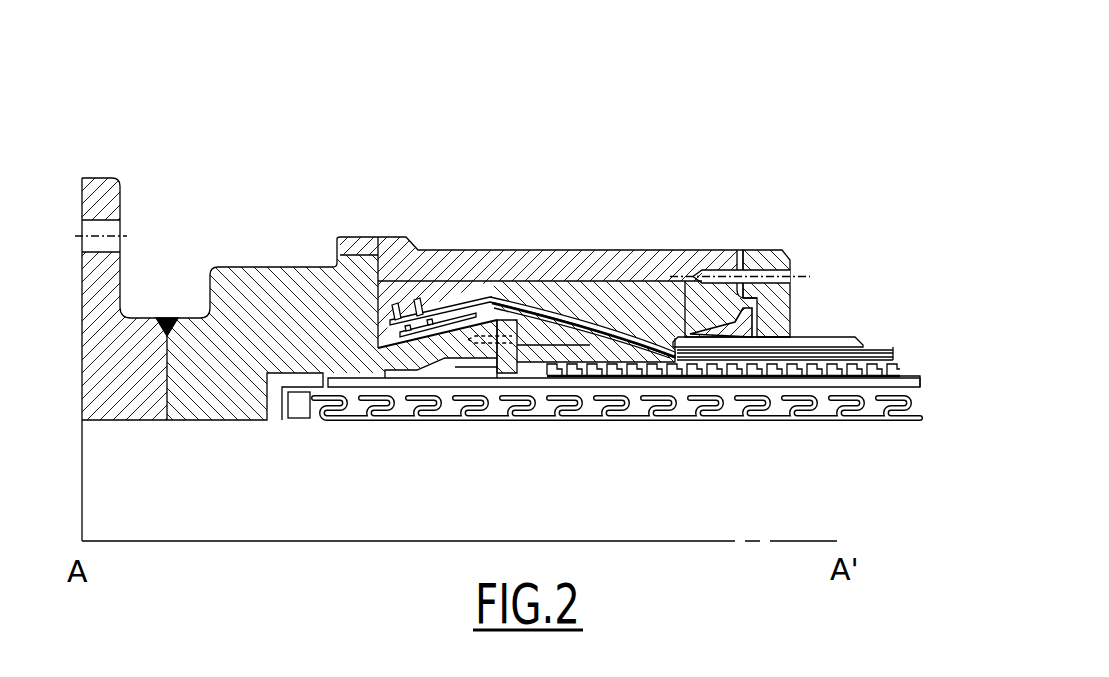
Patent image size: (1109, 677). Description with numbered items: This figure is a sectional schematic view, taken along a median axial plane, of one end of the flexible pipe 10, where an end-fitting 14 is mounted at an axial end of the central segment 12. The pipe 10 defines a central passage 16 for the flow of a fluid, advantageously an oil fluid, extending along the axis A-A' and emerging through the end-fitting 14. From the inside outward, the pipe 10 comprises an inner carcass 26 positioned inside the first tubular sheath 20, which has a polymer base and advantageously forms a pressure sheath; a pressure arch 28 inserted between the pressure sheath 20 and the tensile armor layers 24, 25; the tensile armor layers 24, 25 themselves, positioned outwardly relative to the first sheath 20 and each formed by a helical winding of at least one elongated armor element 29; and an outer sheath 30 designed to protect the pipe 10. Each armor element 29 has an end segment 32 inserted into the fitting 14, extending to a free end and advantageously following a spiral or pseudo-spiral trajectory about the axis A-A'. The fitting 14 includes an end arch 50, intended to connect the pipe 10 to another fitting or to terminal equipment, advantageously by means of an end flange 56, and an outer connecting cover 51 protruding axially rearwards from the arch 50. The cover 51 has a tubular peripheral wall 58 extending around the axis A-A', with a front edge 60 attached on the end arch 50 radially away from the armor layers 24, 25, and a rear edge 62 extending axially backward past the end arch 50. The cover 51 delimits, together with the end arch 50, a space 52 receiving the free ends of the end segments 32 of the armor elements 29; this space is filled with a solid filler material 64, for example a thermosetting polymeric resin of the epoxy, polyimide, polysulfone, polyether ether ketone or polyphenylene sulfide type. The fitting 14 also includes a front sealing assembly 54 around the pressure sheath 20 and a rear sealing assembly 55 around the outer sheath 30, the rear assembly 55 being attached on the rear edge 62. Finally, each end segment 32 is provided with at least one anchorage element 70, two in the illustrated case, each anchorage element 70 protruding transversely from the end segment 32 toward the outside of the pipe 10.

The flexible pipe 10 is at (735, 112).
The central segment 12 is at (950, 300).
The end-fitting 14 is at (273, 212).
The central passage 16 is at (311, 451).
The first tubular sheath 20 is at (905, 395).
The tensile armor layer 24 is at (815, 387).
The tensile armor layer 25 is at (898, 322).
The inner carcass 26 is at (680, 420).
The pressure arch 28 is at (918, 385).
The elongated armor element 29 is at (892, 338).
The outer sheath 30 is at (810, 335).
The end segment 32 is at (575, 302).
The end arch 50 is at (290, 290).
The outer connecting cover 51 is at (713, 238).
The space 52 is at (693, 270).
The front sealing assembly 54 is at (520, 375).
The rear sealing assembly 55 is at (780, 260).
The end flange 56 is at (123, 335).
The tubular peripheral wall 58 is at (505, 288).
The front edge 60 is at (382, 298).
The rear edge 62 is at (727, 252).
The solid filler material 64 is at (508, 290).
The anchorage element 70 is at (425, 300).